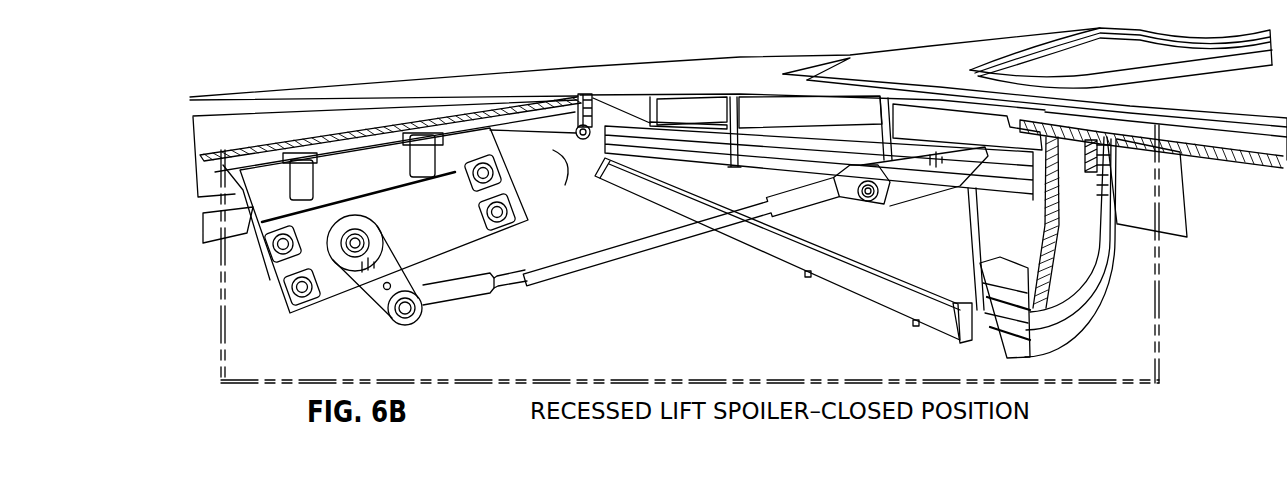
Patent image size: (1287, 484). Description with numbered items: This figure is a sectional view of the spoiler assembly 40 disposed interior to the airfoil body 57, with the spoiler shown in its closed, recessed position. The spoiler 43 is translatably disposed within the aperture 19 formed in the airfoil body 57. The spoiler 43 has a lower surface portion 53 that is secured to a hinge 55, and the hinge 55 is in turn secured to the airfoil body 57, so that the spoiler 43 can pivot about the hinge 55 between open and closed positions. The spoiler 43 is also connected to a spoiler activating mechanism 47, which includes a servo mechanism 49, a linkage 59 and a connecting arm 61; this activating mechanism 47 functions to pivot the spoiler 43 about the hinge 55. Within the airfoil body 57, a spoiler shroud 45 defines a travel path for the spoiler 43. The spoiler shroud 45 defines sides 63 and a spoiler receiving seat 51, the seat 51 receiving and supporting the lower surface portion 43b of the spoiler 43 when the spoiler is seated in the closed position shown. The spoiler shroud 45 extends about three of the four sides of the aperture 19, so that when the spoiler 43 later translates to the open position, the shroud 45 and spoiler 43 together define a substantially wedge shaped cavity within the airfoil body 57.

The spoiler assembly 40 is at (699, 305).
The aperture 19 is at (584, 91).
The spoiler 43 is at (713, 93).
The lower surface portion 43b is at (970, 202).
The spoiler shroud 45 is at (1097, 283).
The spoiler activating mechanism 47 is at (476, 308).
The servo mechanism 49 is at (437, 250).
The spoiler receiving seat 51 is at (997, 343).
The lower surface portion 53 is at (610, 102).
The hinge 55 is at (580, 148).
The airfoil body 57 is at (412, 108).
The linkage 59 is at (363, 298).
The connecting arm 61 is at (580, 270).
The sides 63 is at (860, 242).